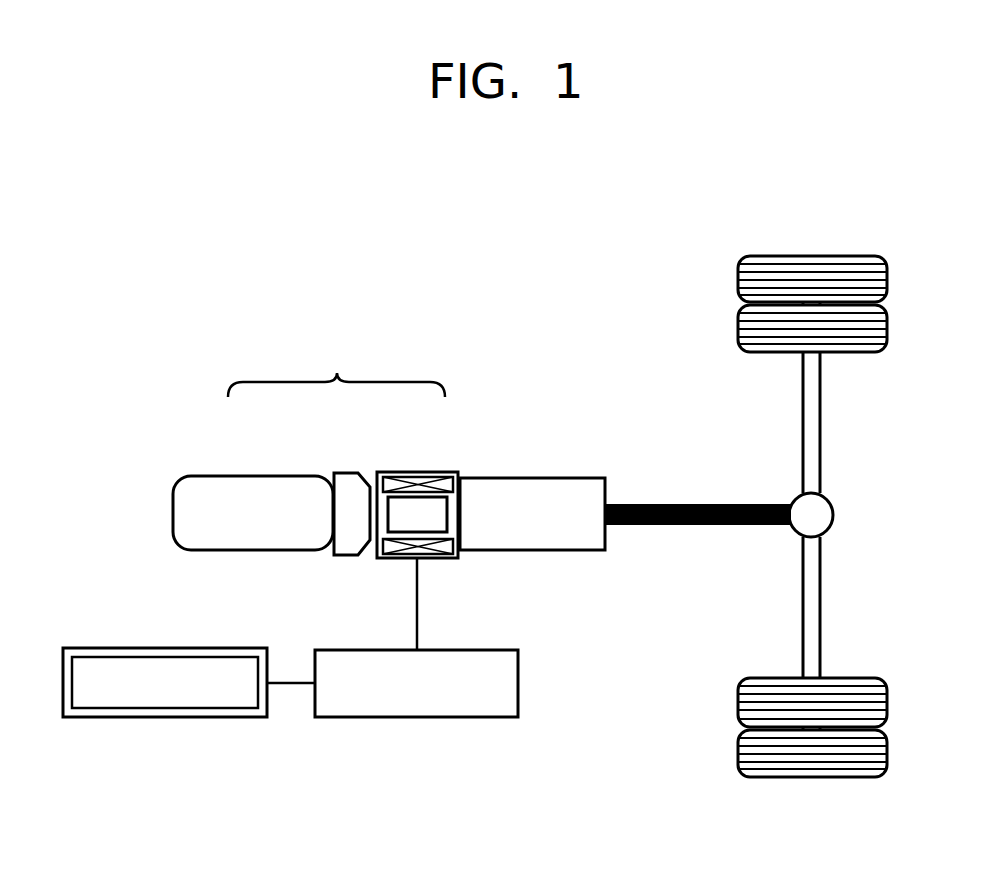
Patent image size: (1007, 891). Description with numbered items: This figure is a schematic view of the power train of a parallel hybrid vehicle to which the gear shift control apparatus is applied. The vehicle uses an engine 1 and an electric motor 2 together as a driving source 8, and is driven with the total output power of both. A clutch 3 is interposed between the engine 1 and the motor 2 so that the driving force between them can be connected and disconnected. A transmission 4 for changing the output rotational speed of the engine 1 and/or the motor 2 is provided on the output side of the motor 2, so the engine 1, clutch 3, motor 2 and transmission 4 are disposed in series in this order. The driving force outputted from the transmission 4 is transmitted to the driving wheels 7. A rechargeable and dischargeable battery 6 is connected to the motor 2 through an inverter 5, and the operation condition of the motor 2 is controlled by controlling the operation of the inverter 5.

The engine 1 is at (254, 476).
The motor 2 is at (420, 472).
The clutch 3 is at (348, 556).
The transmission 4 is at (533, 478).
The inverter 5 is at (418, 718).
The battery 6 is at (166, 718).
The driving wheels 7 is at (815, 256).
The driving source 8 is at (336, 366).